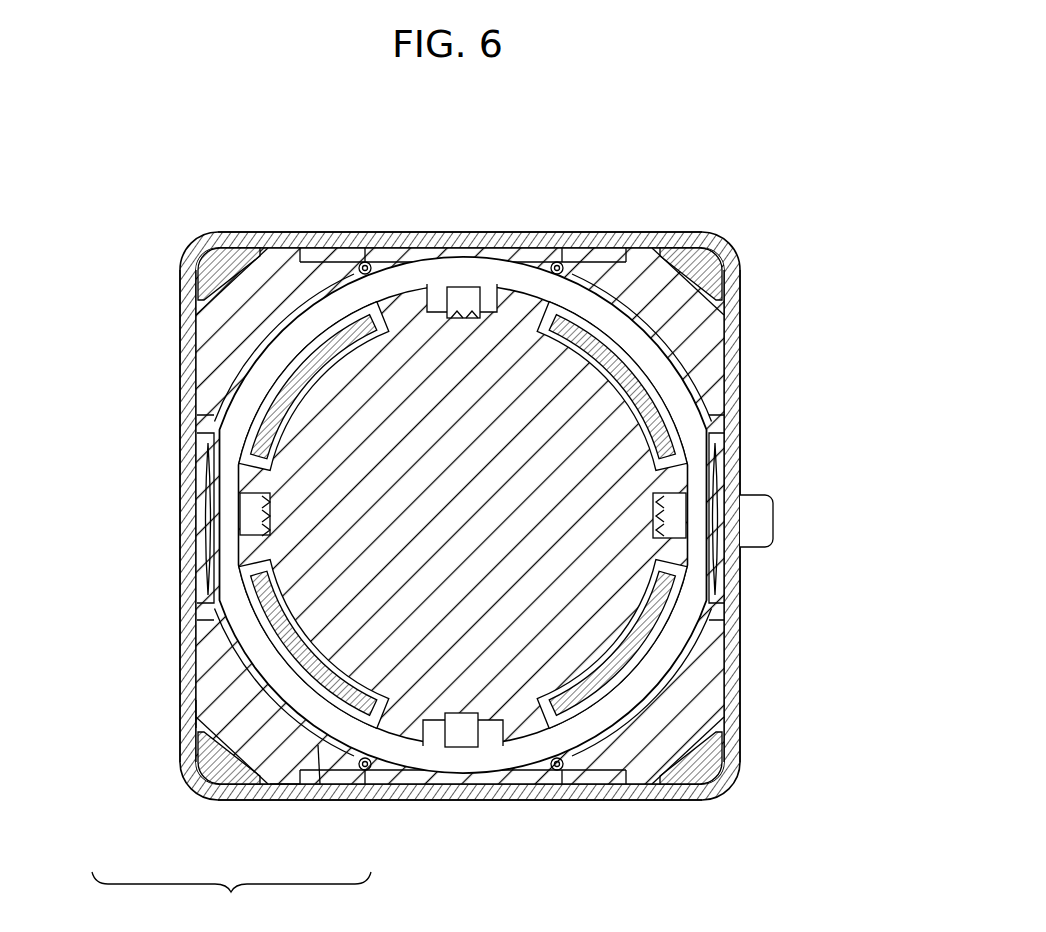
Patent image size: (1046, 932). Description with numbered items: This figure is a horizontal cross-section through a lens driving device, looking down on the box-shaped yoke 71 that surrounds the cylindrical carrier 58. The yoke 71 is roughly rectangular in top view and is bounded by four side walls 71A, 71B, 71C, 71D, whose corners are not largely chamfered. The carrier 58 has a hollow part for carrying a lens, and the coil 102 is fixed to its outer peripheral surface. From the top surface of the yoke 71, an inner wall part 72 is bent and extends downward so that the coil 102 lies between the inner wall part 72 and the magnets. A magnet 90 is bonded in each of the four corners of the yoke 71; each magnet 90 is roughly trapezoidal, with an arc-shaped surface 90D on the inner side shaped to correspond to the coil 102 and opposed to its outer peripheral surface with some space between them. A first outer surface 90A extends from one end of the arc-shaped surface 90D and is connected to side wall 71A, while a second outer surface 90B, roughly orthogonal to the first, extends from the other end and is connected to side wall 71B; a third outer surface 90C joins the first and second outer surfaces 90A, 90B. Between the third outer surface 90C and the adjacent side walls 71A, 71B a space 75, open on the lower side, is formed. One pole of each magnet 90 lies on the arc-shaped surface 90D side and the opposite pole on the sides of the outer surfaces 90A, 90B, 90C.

The yoke 71 is at (740, 430).
The side wall 71A is at (177, 580).
The side wall 71B is at (502, 800).
The side wall 71C is at (738, 603).
The side wall 71D is at (382, 232).
The space 75 is at (672, 253).
The carrier 58 is at (431, 290).
The inner wall part 72 is at (637, 387).
The coil 102 is at (658, 655).
The magnet 90 is at (231, 896).
The first outer surface 90A is at (180, 718).
The second outer surface 90B is at (282, 797).
The third outer surface 90C is at (245, 790).
The arc-shaped surface 90D is at (316, 745).